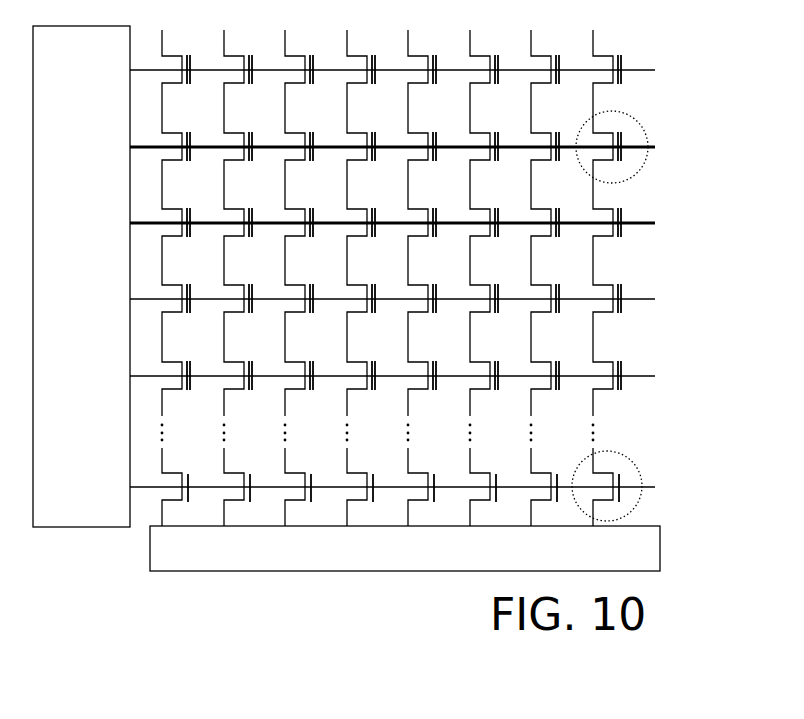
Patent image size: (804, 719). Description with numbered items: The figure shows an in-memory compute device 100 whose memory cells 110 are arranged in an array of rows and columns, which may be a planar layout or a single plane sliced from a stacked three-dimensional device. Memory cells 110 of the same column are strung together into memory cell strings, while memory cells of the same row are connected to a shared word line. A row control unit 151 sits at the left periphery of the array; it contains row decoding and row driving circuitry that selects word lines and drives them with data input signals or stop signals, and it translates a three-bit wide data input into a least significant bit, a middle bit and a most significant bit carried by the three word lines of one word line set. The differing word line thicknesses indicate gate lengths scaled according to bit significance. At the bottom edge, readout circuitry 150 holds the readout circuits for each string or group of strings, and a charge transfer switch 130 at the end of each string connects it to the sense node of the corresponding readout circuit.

The in-memory compute device 100 is at (684, 57).
The memory cell 110 is at (635, 172).
The charge transfer switch 130 is at (630, 462).
The readout circuitry 150 is at (320, 570).
The row control unit 151 is at (80, 527).